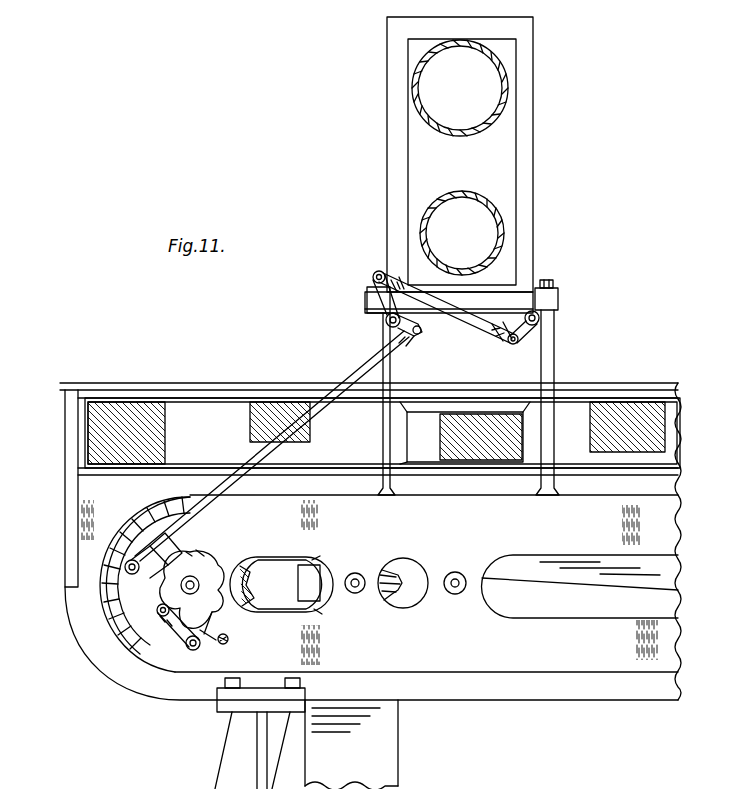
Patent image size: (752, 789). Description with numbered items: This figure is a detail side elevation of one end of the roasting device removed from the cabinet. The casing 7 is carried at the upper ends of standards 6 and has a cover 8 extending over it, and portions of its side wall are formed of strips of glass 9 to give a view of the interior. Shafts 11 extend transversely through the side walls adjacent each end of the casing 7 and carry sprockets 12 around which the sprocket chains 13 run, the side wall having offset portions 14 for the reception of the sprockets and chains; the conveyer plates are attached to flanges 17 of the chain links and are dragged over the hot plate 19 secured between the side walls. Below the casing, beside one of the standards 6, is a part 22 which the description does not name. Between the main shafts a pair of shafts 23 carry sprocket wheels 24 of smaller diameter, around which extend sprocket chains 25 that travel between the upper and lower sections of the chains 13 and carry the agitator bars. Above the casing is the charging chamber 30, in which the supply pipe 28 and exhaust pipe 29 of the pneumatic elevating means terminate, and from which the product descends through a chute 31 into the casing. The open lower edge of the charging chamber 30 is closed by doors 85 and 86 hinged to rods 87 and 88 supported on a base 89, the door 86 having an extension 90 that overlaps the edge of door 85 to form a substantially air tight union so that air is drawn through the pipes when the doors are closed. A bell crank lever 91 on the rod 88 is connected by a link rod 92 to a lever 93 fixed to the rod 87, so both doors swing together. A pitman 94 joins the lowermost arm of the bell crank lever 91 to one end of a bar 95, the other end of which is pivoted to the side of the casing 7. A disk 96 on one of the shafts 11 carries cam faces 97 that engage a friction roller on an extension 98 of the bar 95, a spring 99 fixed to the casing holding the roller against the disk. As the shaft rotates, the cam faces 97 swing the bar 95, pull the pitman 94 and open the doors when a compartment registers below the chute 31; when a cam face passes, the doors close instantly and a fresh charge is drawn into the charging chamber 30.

The standards 6 is at (240, 739).
The casing 7 is at (373, 541).
The cover 8 is at (232, 390).
The strips of glass 9 is at (379, 433).
The shafts 11 is at (196, 574).
The sprockets 12 is at (244, 584).
The sprocket chains 13 is at (162, 528).
The offset portions 14 is at (132, 651).
The flanges 17 is at (172, 512).
The hot plate 19 is at (567, 572).
The housing box 22 is at (374, 741).
The shafts 23 is at (356, 573).
The sprocket wheels 24 is at (392, 578).
The sprocket chains 25 is at (306, 566).
The supply pipe 28 is at (462, 233).
The exhaust pipe 29 is at (460, 88).
The charging chamber 30 is at (449, 165).
The chute 31 is at (465, 433).
The door 85 is at (540, 329).
The door 86 is at (435, 316).
The rod 87 is at (539, 317).
The rod 88 is at (386, 321).
The base 89 is at (560, 296).
The extension 90 is at (463, 322).
The bell crank lever 91 is at (384, 302).
The link rod 92 is at (453, 309).
The lever 93 is at (515, 342).
The pitman 94 is at (335, 398).
The bar 95 is at (168, 627).
The disk 96 is at (212, 566).
The cam faces 97 is at (205, 628).
The extension 98 is at (158, 612).
The spring 99 is at (207, 652).